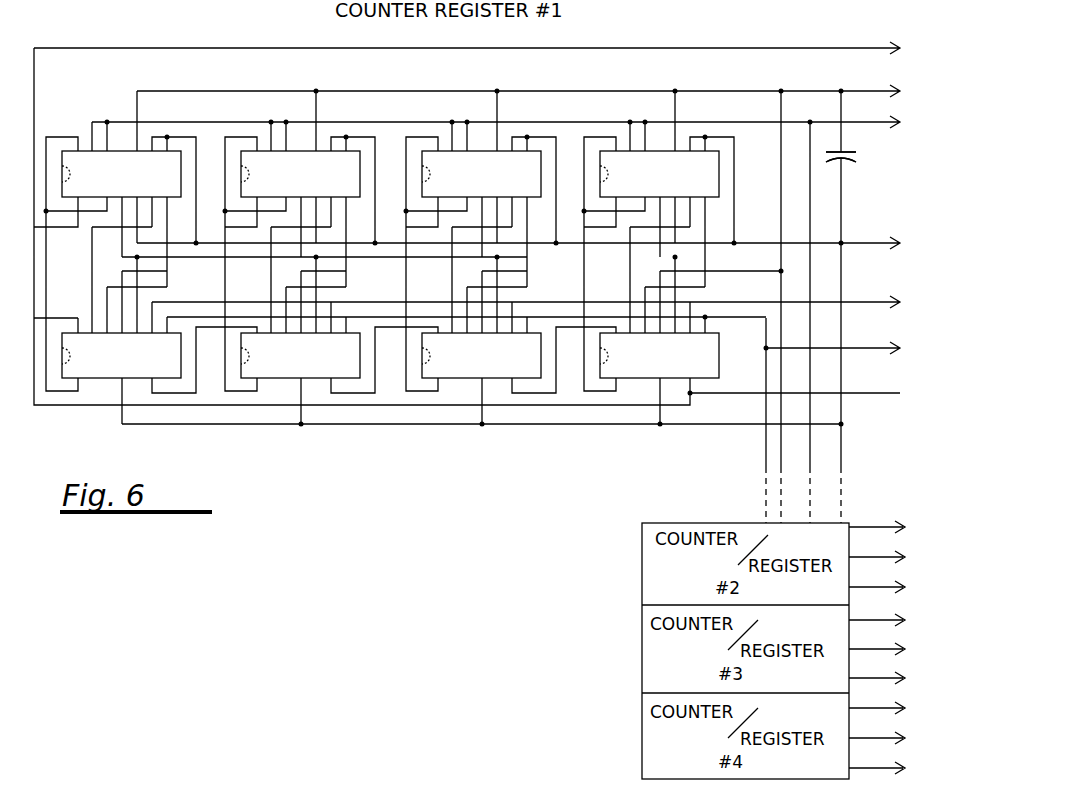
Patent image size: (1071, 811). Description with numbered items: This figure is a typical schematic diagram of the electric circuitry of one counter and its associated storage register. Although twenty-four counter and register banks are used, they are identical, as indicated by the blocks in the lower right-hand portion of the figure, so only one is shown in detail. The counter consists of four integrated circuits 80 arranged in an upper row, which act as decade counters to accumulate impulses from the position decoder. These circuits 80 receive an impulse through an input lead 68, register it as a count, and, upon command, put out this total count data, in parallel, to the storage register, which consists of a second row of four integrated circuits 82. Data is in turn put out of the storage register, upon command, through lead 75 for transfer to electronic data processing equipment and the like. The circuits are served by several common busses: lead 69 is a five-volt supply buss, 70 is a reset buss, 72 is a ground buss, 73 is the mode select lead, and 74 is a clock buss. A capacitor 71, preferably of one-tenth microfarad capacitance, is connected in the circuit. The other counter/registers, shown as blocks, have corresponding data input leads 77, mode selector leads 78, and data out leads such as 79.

The input lead 68 is at (878, 48).
The 5-volt supply buss 69 is at (880, 91).
The reset buss 70 is at (880, 122).
The capacitor 71 is at (858, 152).
The ground buss 72 is at (880, 243).
The mode select lead 73 is at (880, 302).
The clock buss 74 is at (880, 348).
The lead 75 is at (882, 393).
The data input lead 77 is at (895, 531).
The mode selector lead 78 is at (893, 557).
The data out lead 79 is at (893, 587).
The integrated circuit 80 is at (537, 152).
The integrated circuit 82 is at (600, 378).